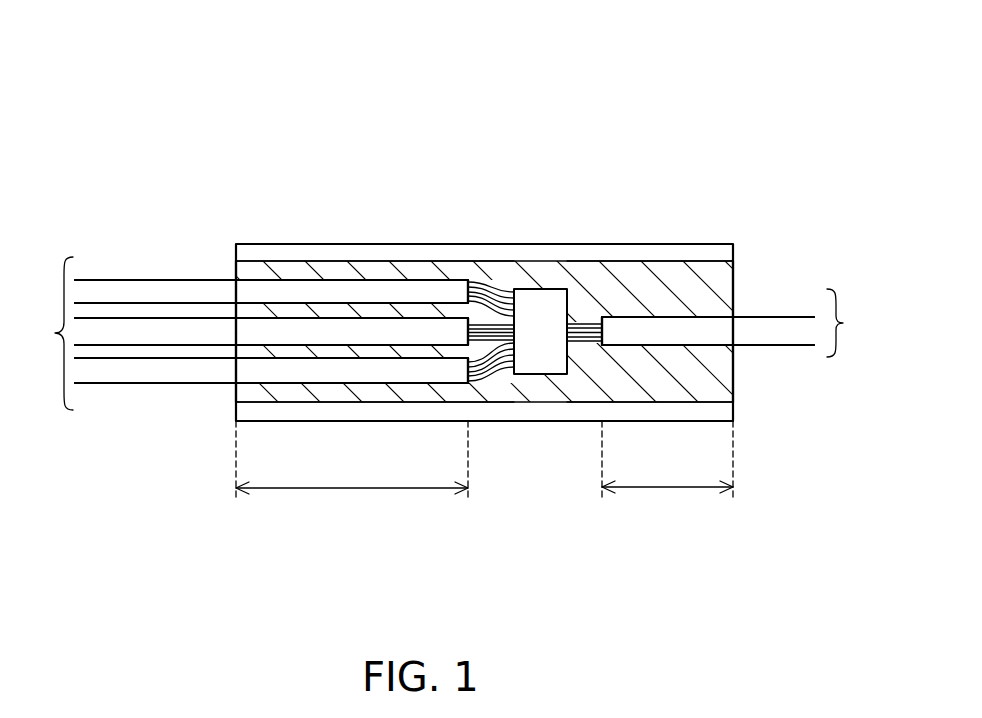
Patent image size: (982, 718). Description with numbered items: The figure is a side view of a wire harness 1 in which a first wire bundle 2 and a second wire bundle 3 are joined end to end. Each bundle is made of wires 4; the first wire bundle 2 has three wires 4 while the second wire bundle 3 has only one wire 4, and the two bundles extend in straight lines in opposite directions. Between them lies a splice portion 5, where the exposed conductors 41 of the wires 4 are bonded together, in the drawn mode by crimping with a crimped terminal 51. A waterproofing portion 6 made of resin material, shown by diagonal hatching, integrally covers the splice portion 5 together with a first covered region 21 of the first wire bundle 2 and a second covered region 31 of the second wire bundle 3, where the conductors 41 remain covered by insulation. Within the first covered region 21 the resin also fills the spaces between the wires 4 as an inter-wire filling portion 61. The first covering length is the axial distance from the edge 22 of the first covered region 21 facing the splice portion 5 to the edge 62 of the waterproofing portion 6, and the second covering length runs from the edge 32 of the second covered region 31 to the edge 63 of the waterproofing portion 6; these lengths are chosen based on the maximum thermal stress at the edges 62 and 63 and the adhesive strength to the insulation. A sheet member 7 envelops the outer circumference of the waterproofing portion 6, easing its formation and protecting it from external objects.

The wire harness 1 is at (780, 97).
The first wire bundle 2 is at (250, 333).
The second wire bundle 3 is at (733, 323).
The wire 4 is at (152, 377).
The splice portion 5 is at (543, 380).
The waterproofing portion 6 is at (448, 272).
The sheet member 7 is at (638, 250).
The first covered region 21 is at (378, 279).
The edge of the first covered region 22 is at (472, 392).
The second covered region 31 is at (680, 310).
The edge of the second covered region 32 is at (600, 352).
The conductor 41 is at (495, 292).
The crimped terminal 51 is at (552, 298).
The inter-wire filling portion 61 is at (335, 352).
The edge of the waterproofing portion 62 is at (237, 392).
The edge of the waterproofing portion 63 is at (733, 372).